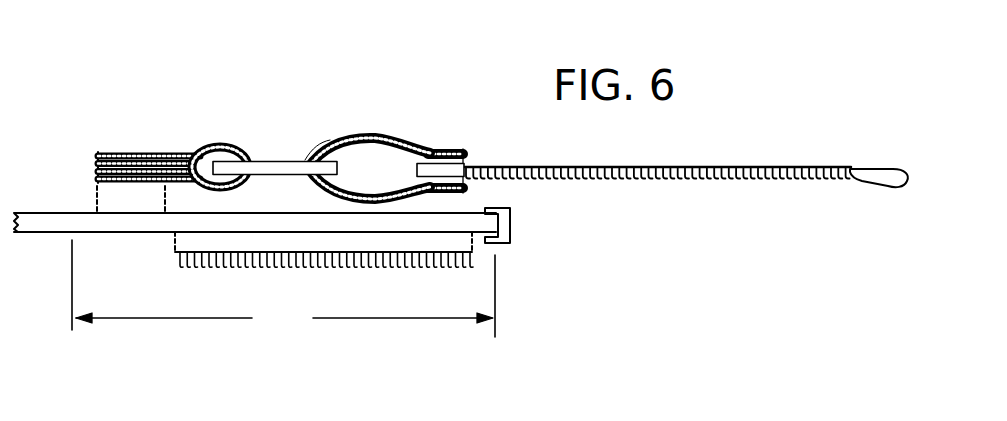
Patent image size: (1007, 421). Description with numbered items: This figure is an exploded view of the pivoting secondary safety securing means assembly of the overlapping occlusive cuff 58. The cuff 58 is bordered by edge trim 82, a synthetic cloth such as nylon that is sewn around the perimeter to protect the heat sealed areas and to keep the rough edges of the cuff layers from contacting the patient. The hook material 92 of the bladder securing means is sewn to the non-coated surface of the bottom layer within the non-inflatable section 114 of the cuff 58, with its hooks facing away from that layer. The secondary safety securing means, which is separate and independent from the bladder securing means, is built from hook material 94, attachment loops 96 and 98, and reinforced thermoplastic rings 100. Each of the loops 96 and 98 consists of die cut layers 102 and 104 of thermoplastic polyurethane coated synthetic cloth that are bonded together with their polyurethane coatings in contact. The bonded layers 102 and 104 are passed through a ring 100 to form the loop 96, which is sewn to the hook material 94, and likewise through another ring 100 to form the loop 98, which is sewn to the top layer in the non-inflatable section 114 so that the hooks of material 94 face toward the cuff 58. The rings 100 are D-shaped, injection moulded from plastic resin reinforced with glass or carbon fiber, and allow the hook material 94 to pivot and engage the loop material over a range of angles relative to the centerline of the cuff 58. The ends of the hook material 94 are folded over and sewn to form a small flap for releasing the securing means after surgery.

The cuff 58 is at (47, 221).
The edge trim 82 is at (510, 223).
The hook material 92 is at (203, 266).
The hook material 94 is at (680, 179).
The attachment loop 96 is at (445, 60).
The attachment loop 98 is at (276, 112).
The reinforced thermoplastic ring 100 is at (276, 160).
The layer 102 is at (162, 152).
The layer 104 is at (91, 150).
The non-inflatable section 114 is at (283, 288).